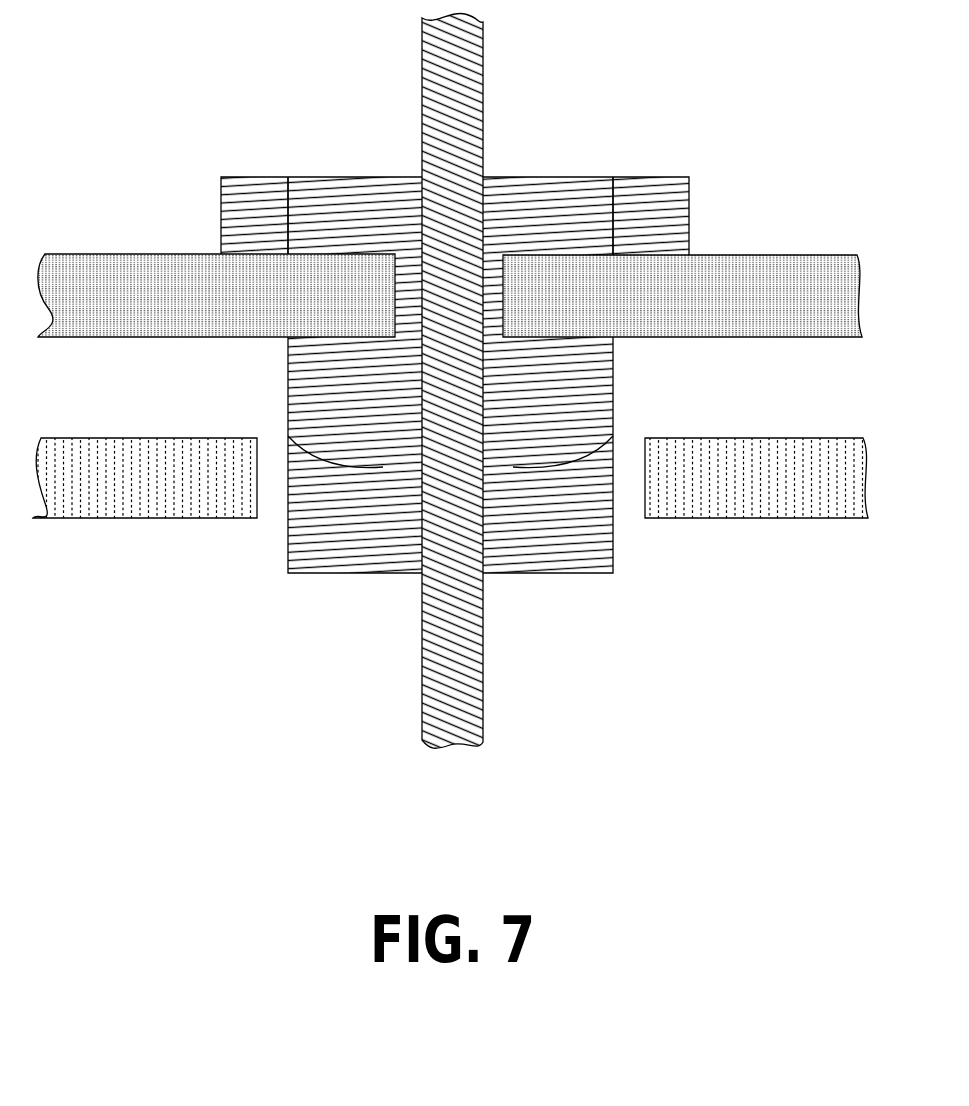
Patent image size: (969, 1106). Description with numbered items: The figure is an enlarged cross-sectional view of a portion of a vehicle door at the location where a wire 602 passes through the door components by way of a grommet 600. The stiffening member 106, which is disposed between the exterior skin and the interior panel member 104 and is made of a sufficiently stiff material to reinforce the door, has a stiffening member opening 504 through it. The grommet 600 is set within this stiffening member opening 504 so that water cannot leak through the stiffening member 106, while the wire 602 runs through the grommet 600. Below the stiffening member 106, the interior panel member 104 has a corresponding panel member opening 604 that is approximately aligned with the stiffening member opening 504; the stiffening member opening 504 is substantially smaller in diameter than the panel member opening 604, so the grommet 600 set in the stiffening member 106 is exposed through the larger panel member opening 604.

The interior panel member 104 is at (131, 508).
The stiffening member 106 is at (120, 277).
The stiffening member opening 504 is at (491, 256).
The grommet 600 is at (338, 193).
The wire 602 is at (483, 58).
The panel member opening 604 is at (628, 506).